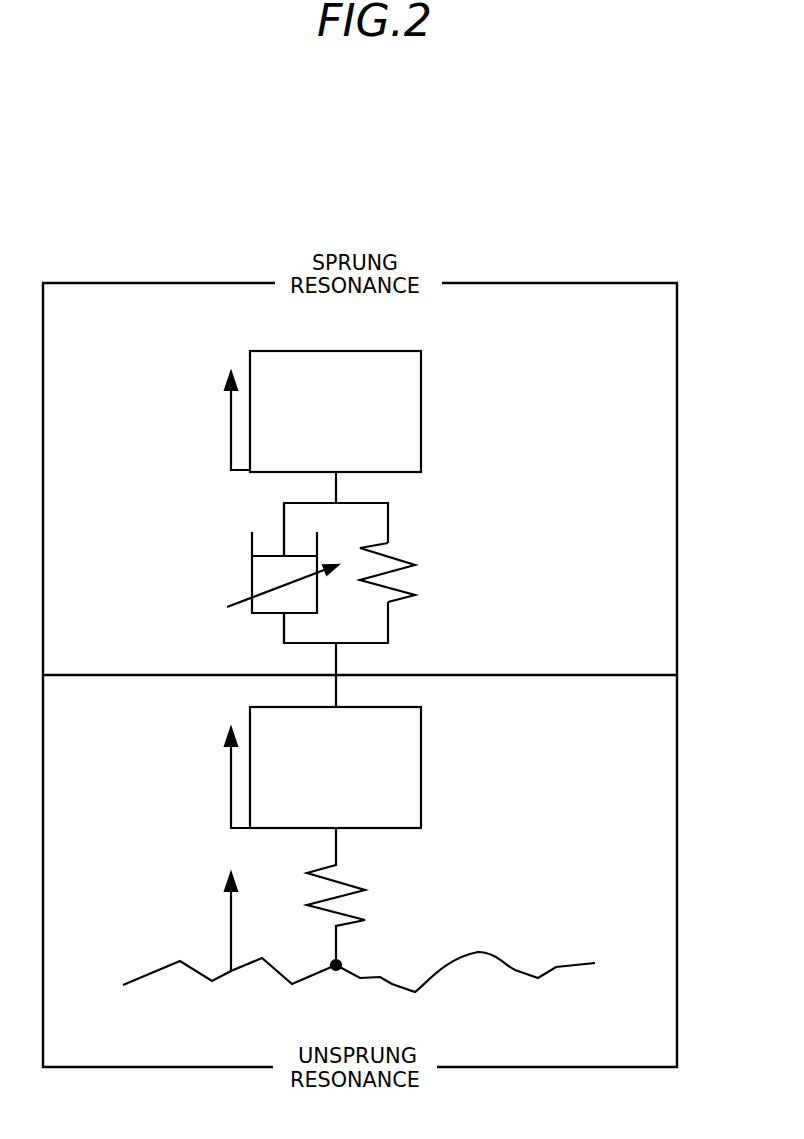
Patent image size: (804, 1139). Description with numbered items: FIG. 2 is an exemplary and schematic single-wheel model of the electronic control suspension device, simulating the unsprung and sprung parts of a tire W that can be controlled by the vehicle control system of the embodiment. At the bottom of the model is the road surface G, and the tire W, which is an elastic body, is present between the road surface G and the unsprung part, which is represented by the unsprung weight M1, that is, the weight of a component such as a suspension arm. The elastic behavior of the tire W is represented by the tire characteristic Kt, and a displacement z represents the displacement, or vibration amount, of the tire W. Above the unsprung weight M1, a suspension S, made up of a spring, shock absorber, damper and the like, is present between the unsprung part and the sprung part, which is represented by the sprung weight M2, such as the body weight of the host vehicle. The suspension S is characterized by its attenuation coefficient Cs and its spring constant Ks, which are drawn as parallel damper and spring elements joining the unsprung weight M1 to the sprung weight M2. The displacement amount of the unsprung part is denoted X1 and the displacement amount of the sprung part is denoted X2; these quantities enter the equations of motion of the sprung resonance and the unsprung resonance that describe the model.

The sprung weight M2 is at (421, 410).
The unsprung weight M1 is at (421, 765).
The suspension S is at (335, 573).
The attenuation coefficient Cs is at (252, 573).
The spring constant Ks is at (415, 595).
The tire characteristic Kt is at (365, 918).
The tire W is at (378, 899).
The road surface G is at (558, 968).
The displacement amount of the sprung part X2 is at (219, 421).
The displacement amount of the unsprung part X1 is at (219, 778).
The displacement z is at (221, 922).